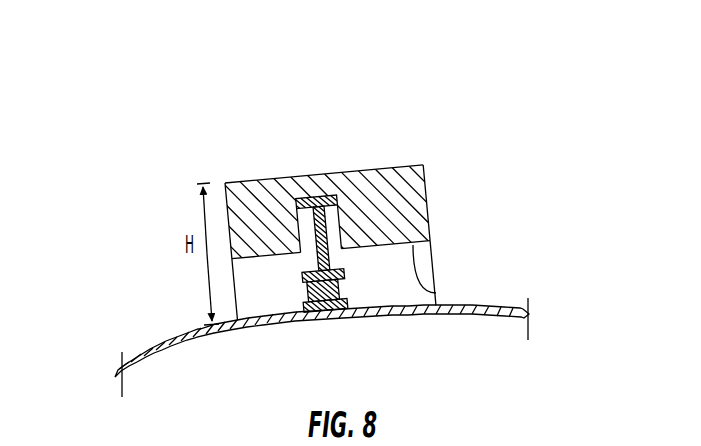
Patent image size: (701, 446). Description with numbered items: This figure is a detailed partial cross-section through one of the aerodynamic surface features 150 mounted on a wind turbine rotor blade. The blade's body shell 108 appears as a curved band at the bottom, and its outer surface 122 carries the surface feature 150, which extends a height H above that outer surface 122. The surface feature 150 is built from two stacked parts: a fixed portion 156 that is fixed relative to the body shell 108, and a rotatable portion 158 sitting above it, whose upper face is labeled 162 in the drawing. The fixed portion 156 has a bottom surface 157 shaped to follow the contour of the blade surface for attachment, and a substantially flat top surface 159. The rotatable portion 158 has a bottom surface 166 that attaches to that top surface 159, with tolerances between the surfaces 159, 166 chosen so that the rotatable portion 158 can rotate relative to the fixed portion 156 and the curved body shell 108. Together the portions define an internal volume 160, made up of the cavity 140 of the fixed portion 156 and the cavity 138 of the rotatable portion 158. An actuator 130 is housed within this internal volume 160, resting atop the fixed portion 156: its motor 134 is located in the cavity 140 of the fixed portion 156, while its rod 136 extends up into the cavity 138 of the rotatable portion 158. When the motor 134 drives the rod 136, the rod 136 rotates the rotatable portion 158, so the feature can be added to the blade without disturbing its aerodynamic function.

The body shell 108 is at (153, 347).
The outer surface 122 is at (140, 357).
The actuator 130 is at (304, 289).
The motor 134 is at (343, 289).
The rod 136 is at (331, 200).
The cavity of the rotatable portion 138 is at (309, 227).
The cavity of the fixed portion 140 is at (385, 283).
The aerodynamic surface feature 150 is at (460, 143).
The fixed portion 156 is at (436, 275).
The bottom surface 157 is at (383, 319).
The rotatable portion 158 is at (431, 197).
The top surface 159 is at (434, 292).
The internal volume 160 is at (297, 199).
The top surface 162 is at (258, 180).
The bottom surface 166 is at (397, 243).